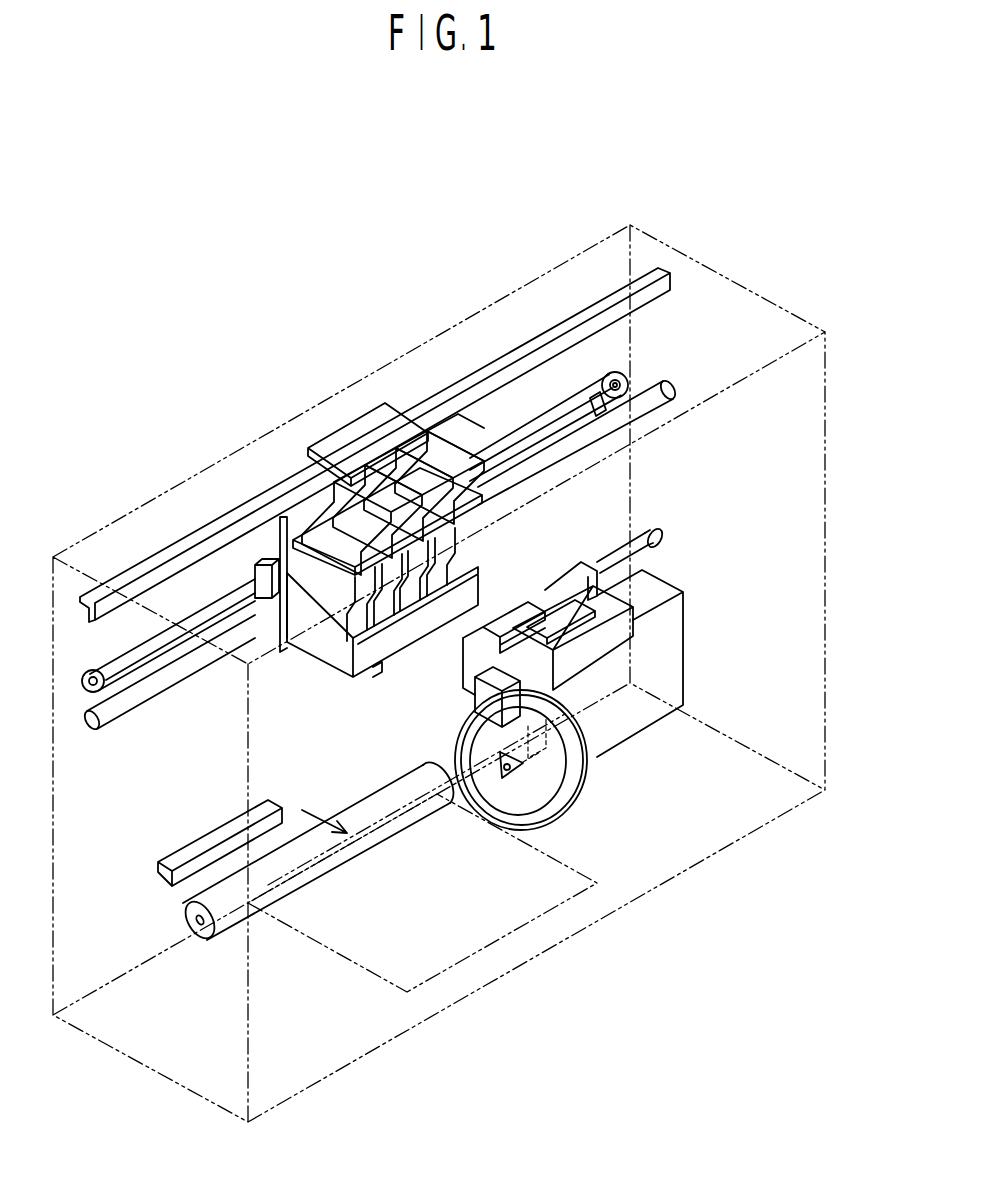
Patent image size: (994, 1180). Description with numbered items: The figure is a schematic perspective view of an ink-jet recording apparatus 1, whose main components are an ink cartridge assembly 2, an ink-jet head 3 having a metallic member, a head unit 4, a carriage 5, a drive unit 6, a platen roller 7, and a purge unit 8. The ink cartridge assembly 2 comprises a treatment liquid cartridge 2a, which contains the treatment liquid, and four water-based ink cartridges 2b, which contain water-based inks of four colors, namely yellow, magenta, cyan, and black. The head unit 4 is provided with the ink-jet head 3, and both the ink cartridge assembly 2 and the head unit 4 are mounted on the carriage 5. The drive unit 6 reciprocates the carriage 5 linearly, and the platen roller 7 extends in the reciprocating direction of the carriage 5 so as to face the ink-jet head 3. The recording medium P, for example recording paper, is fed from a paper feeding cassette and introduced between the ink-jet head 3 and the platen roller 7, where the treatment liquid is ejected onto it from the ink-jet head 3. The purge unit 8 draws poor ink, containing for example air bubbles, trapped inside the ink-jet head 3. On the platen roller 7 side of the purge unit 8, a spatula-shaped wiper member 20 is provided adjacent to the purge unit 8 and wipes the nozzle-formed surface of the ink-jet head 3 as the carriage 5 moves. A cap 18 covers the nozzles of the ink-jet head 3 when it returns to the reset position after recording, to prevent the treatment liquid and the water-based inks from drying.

The ink-jet recording apparatus 1 is at (323, 240).
The ink cartridge assembly 2 is at (349, 455).
The treatment liquid cartridge 2a is at (308, 480).
The water-based ink cartridges 2b is at (368, 423).
The ink-jet head 3 is at (433, 637).
The head unit 4 is at (427, 673).
The carriage 5 is at (267, 542).
The drive unit 6 is at (655, 253).
The platen roller 7 is at (327, 855).
The purge unit 8 is at (736, 690).
The cap 18 is at (610, 589).
The wiper member 20 is at (497, 678).
The recording medium P is at (377, 957).